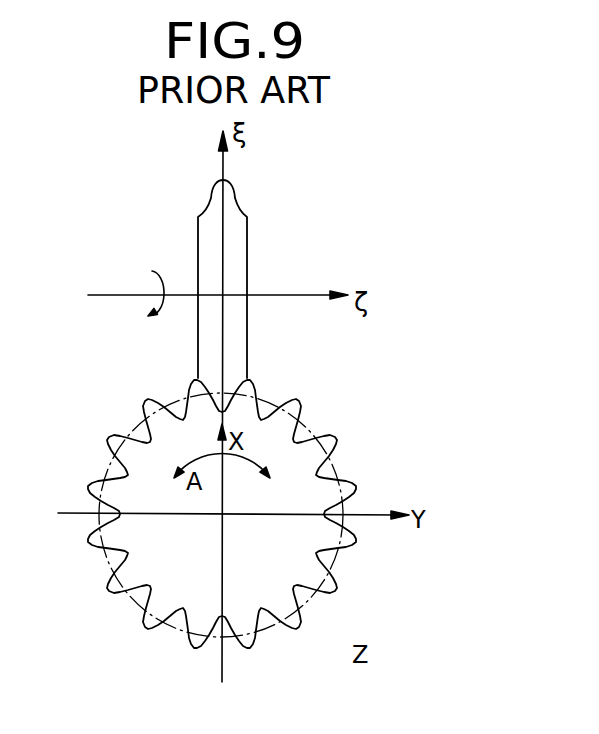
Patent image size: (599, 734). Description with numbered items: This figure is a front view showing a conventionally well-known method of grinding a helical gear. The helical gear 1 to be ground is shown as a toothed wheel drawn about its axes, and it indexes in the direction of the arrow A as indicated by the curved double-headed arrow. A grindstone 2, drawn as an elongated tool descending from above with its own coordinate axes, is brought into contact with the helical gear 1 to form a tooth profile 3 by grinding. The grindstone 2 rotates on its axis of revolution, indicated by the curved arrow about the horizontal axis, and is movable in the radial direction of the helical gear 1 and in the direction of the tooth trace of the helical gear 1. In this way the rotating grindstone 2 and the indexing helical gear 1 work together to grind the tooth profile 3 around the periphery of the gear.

The helical gear 1 is at (287, 503).
The grindstone 2 is at (233, 237).
The tooth profile 3 is at (298, 403).